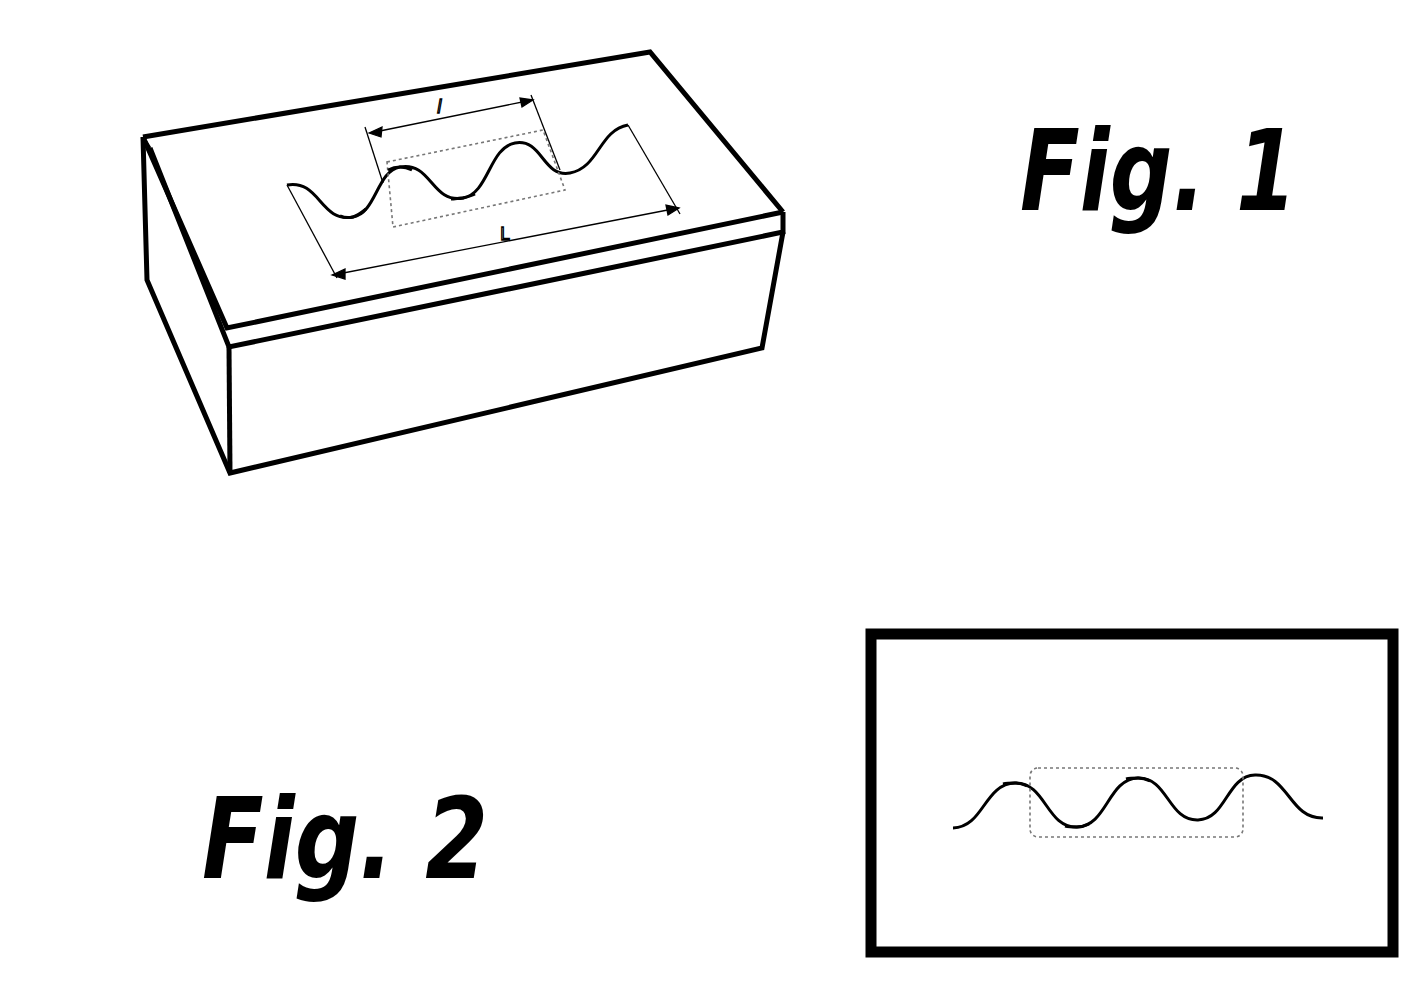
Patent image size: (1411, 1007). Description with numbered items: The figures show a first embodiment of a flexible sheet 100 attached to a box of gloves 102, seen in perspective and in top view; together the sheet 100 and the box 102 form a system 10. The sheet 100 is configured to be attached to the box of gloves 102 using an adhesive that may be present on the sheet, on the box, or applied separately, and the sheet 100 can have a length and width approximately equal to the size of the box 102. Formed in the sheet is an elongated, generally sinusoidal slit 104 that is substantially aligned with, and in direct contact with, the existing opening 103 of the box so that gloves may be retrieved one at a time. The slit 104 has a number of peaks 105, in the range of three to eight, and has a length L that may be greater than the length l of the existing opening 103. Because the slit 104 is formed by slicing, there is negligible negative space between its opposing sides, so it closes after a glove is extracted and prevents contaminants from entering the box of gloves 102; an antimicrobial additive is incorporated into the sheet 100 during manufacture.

In FIG. 1, the system 10 is at (569, 274).
In FIG. 1, the sheet 100 is at (569, 274).
In FIG. 2, the sheet 100 is at (865, 898).
In FIG. 1, the box of gloves 102 is at (723, 360).
In FIG. 1, the existing opening 103 is at (410, 158).
In FIG. 2, the existing opening 103 is at (1163, 768).
In FIG. 1, the elongated slit 104 is at (597, 162).
In FIG. 2, the elongated slit 104 is at (977, 813).
In FIG. 1, the peaks 105 is at (400, 167).
In FIG. 2, the peaks 105 is at (1077, 827).